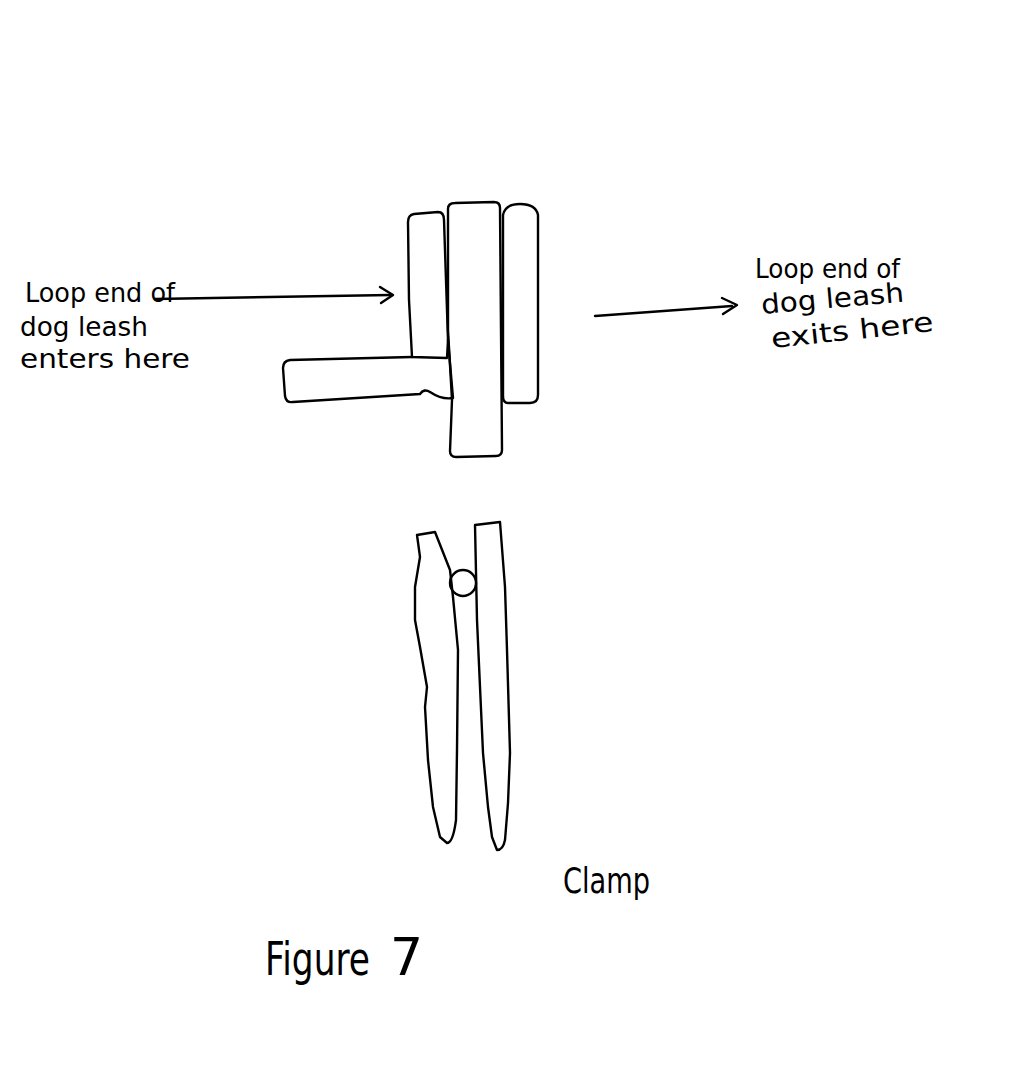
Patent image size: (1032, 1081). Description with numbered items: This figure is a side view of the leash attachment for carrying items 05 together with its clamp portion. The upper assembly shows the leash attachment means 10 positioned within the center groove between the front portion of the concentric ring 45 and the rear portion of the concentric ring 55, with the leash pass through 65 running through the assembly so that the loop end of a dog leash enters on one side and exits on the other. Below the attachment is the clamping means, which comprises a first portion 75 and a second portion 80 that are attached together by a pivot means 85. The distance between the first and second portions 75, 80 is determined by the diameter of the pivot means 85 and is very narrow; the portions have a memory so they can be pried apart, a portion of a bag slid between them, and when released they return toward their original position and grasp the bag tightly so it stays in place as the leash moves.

The leash attachment for carrying items 05 is at (498, 142).
The leash attachment means 10 is at (362, 373).
The rear portion of concentric ring 55 is at (423, 223).
The leash pass through 65 is at (541, 288).
The front portion of concentric ring 45 is at (531, 365).
The second portion 80 is at (435, 728).
The first portion 75 is at (497, 738).
The pivot means 85 is at (462, 578).